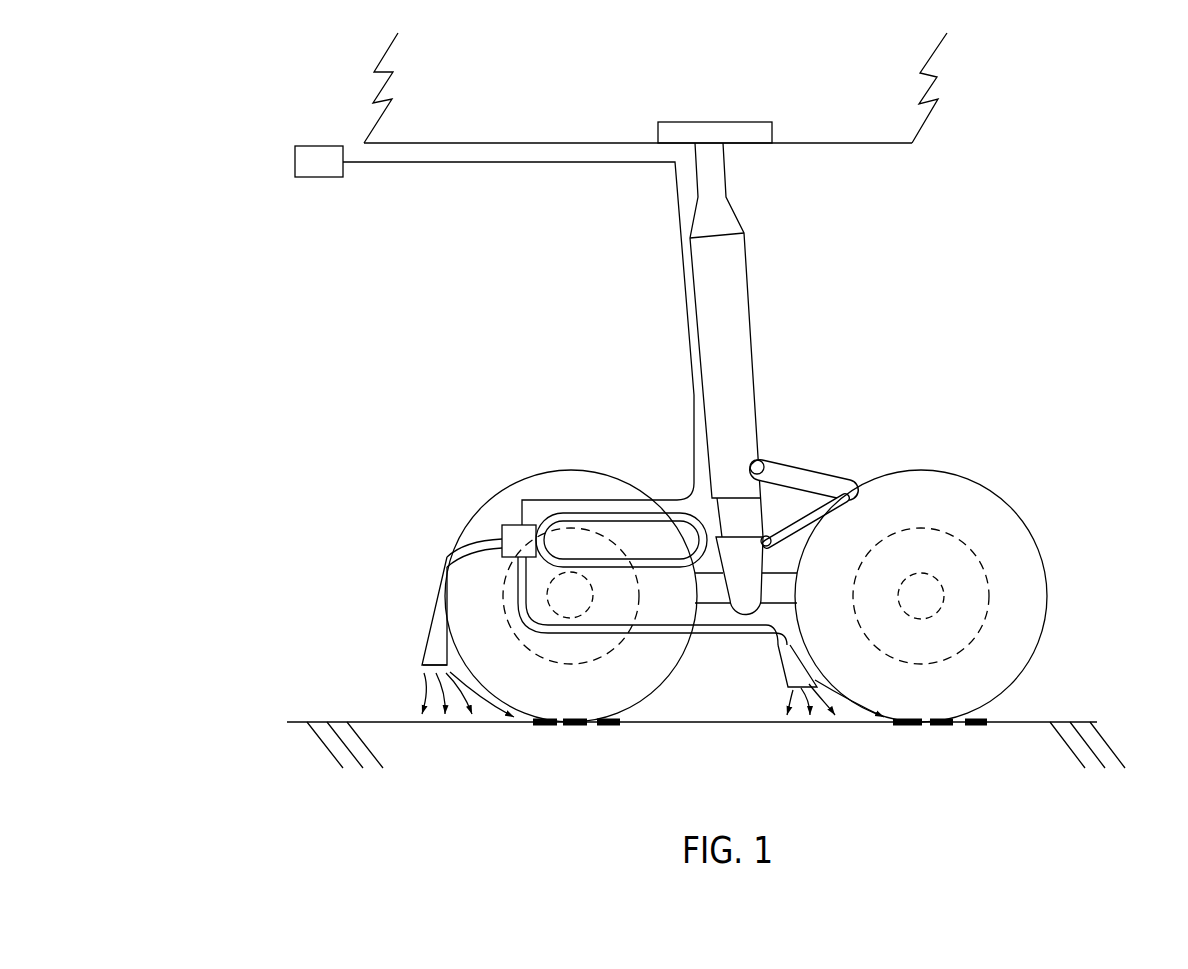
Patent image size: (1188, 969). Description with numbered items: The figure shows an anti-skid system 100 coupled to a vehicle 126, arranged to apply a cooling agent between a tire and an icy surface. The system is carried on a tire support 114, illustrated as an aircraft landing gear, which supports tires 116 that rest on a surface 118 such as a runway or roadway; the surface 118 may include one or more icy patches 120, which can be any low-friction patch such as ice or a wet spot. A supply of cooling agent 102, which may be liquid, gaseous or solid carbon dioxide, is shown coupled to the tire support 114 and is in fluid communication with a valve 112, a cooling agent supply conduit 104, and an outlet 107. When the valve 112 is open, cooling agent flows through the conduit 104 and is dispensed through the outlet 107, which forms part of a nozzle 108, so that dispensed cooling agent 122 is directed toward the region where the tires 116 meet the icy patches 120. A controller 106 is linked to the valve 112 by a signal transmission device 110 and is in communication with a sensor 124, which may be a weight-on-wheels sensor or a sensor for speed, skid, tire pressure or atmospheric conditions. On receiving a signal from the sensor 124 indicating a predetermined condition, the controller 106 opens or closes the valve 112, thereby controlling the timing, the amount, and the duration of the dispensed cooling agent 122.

The anti-skid system 100 is at (967, 243).
The supply of cooling agent 102 is at (644, 510).
The cooling agent supply conduit 104 is at (512, 600).
The controller 106 is at (290, 162).
The outlet 107 is at (420, 673).
The nozzle 108 is at (428, 623).
The signal transmission device 110 is at (505, 165).
The valve 112 is at (505, 515).
The tire support 114 is at (757, 365).
The tires 116 is at (482, 527).
The surface 118 is at (1069, 716).
The icy patches 120 is at (886, 728).
The dispensed cooling agent 122 is at (777, 703).
The sensor 124 is at (747, 520).
The vehicle 126 is at (933, 80).